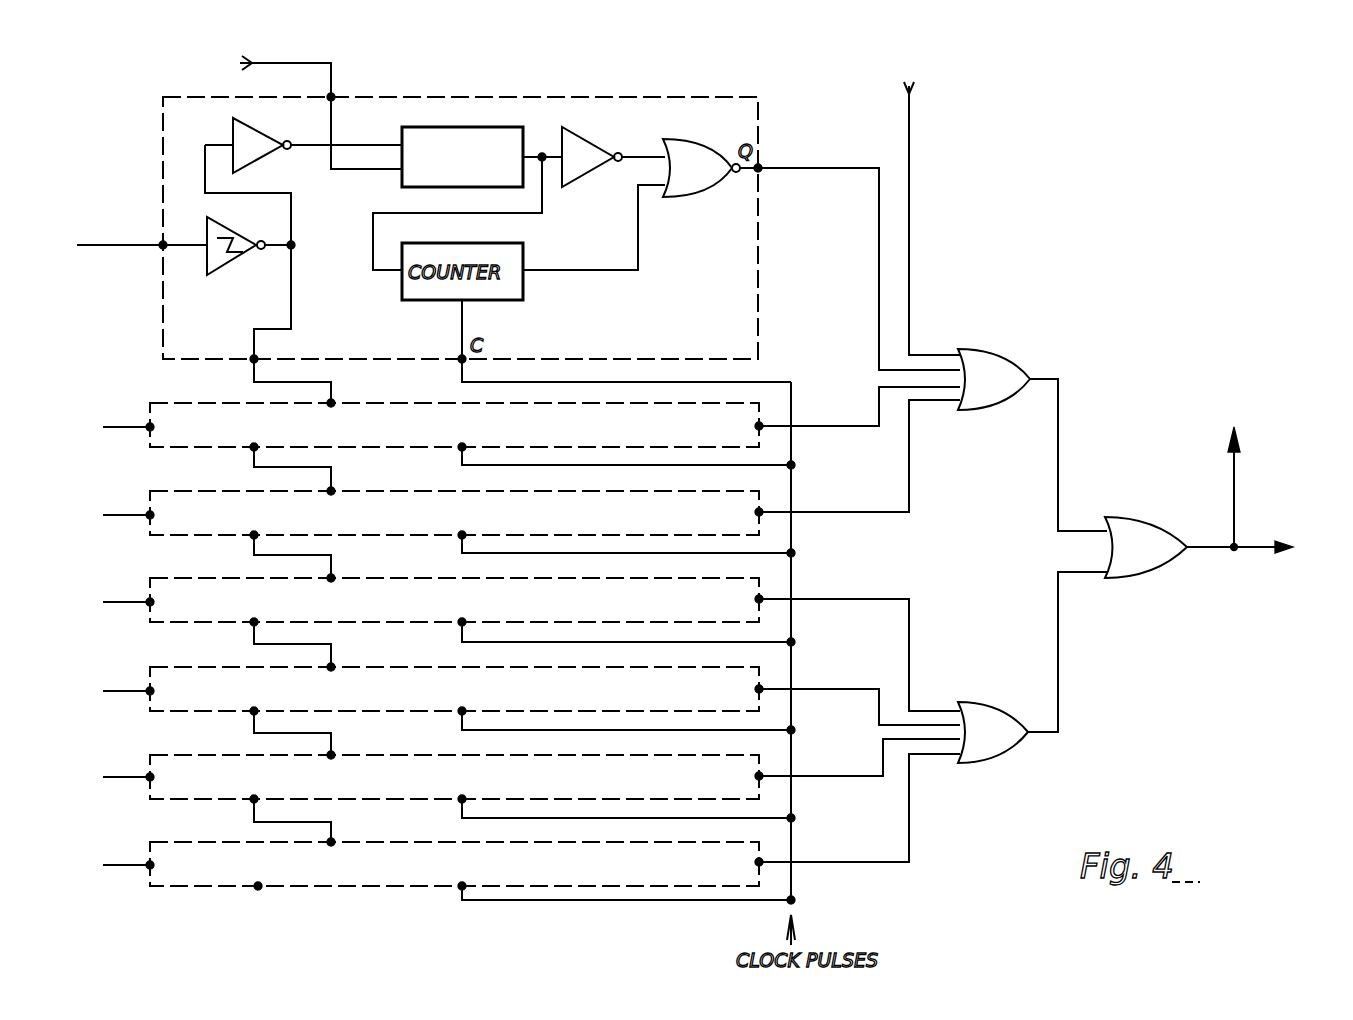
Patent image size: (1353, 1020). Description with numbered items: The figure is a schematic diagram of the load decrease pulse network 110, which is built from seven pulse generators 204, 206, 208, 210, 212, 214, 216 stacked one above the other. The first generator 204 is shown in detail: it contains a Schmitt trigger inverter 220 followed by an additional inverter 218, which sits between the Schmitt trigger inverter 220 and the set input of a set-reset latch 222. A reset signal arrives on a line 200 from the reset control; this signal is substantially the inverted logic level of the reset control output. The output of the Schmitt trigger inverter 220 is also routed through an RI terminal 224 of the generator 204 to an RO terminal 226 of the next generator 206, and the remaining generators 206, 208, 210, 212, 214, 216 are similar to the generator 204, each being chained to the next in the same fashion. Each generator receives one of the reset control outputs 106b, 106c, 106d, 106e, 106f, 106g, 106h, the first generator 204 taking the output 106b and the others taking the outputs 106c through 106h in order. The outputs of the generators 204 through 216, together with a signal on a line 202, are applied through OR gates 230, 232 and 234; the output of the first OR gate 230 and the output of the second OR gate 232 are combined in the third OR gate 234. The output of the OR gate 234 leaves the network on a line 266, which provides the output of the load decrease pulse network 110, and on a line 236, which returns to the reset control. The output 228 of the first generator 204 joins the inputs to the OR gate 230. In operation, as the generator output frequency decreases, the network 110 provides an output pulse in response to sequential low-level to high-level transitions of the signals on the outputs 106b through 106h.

The load decrease pulse network 110 is at (1221, 337).
The output of the reset control 106b is at (126, 246).
The output of the reset control 106c is at (128, 428).
The output of the reset control 106d is at (128, 516).
The output of the reset control 106e is at (128, 603).
The output of the reset control 106f is at (128, 692).
The output of the reset control 106g is at (128, 778).
The output of the reset control 106h is at (128, 866).
The line 200 is at (331, 63).
The line 202 is at (909, 111).
The pulse generator 204 is at (758, 104).
The pulse generator 206 is at (762, 400).
The pulse generator 208 is at (762, 497).
The pulse generator 210 is at (762, 583).
The pulse generator 212 is at (762, 674).
The pulse generator 214 is at (762, 759).
The pulse generator 216 is at (762, 847).
The inverter 218 is at (233, 124).
The Schmitt trigger inverter 220 is at (240, 262).
The set-reset latch 222 is at (455, 127).
The RI terminal 224 is at (254, 359).
The RO terminal 226 is at (333, 402).
The output line 228 is at (760, 170).
The OR gate 230 is at (1010, 350).
The OR gate 232 is at (992, 702).
The OR gate 234 is at (1168, 569).
The line 236 is at (1236, 477).
The line 266 is at (1253, 547).